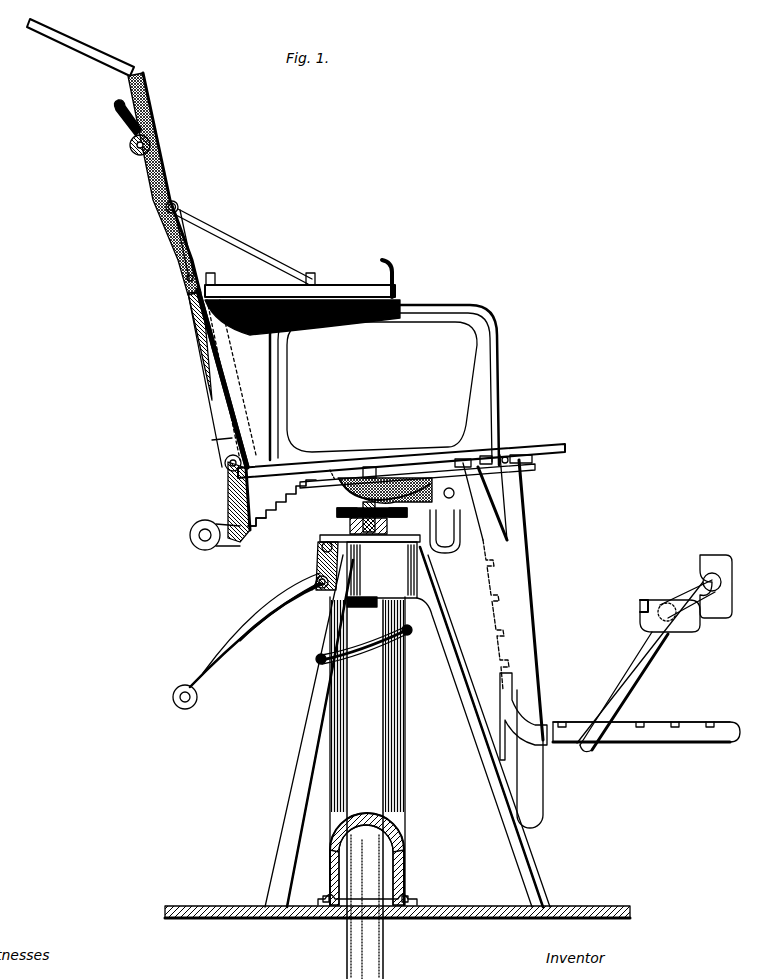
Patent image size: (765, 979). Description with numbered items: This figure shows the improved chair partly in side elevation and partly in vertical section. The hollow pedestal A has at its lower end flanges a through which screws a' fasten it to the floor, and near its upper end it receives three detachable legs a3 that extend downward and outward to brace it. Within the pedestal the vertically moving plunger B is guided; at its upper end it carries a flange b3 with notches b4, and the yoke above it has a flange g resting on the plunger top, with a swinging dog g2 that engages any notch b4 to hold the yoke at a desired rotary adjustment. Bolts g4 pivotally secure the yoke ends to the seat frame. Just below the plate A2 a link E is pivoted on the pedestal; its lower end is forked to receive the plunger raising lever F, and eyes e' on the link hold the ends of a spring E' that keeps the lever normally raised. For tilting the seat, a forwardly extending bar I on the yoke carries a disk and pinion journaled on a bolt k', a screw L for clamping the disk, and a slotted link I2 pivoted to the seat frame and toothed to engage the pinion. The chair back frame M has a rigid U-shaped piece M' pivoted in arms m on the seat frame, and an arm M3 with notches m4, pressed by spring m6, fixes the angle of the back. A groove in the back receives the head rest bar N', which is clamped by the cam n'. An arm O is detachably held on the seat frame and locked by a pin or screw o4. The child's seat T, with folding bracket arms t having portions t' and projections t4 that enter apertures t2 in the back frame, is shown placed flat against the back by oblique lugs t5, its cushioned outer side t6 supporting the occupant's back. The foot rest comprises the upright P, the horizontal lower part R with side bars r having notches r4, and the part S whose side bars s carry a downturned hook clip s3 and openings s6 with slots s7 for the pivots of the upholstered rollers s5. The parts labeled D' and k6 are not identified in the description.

The head rest bar N' is at (113, 157).
The bar clamping cam n' is at (127, 127).
The arm portions t' is at (193, 238).
The folding bracket arms t is at (243, 246).
The apertures t2 is at (174, 200).
The projections t4 is at (188, 300).
The cushioned outer side t6 is at (196, 338).
The child's seat T is at (340, 290).
The oblique lugs t5 is at (393, 275).
The arm O is at (497, 378).
The fastening pin or screw o4 is at (512, 452).
The screw L is at (400, 470).
The screws a' is at (375, 663).
The bolts g4 is at (363, 468).
The arms m is at (224, 466).
The U-shaped piece M' is at (218, 502).
The arm M3 is at (210, 549).
The notches m4 is at (272, 506).
The spring m6 is at (264, 512).
The chair back frame M is at (233, 378).
The yoke flange g is at (362, 508).
The notches b4 is at (340, 511).
The plunger flange b3 is at (398, 514).
The swinging dog g2 is at (352, 522).
The plate A2 is at (318, 545).
The eyes e' is at (314, 565).
The link E is at (291, 577).
The spring E' is at (281, 612).
The plunger raising lever F is at (245, 616).
The connecting rod D' is at (351, 647).
The detachable legs a3 is at (306, 695).
The pedestal A is at (404, 778).
The plunger B is at (345, 940).
The flanges a is at (373, 893).
The bar I is at (430, 470).
The bolt k' is at (463, 507).
The slotted link I2 is at (446, 552).
The upright P is at (530, 584).
The rack notches k6 is at (504, 641).
The horizontal lower part R is at (598, 742).
The side bars r is at (632, 735).
The notches r4 is at (640, 720).
The foot receiving part S is at (655, 598).
The side bars s is at (612, 676).
The downturned hook clip s3 is at (675, 626).
The openings s6 is at (641, 604).
The slots s7 is at (702, 580).
The rollers s5 is at (716, 560).